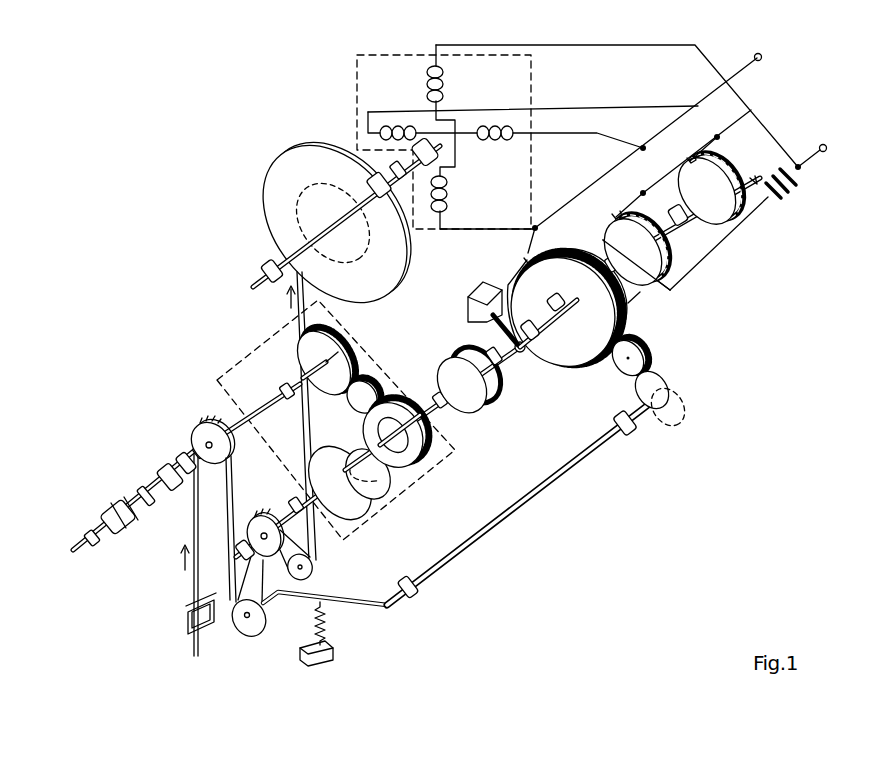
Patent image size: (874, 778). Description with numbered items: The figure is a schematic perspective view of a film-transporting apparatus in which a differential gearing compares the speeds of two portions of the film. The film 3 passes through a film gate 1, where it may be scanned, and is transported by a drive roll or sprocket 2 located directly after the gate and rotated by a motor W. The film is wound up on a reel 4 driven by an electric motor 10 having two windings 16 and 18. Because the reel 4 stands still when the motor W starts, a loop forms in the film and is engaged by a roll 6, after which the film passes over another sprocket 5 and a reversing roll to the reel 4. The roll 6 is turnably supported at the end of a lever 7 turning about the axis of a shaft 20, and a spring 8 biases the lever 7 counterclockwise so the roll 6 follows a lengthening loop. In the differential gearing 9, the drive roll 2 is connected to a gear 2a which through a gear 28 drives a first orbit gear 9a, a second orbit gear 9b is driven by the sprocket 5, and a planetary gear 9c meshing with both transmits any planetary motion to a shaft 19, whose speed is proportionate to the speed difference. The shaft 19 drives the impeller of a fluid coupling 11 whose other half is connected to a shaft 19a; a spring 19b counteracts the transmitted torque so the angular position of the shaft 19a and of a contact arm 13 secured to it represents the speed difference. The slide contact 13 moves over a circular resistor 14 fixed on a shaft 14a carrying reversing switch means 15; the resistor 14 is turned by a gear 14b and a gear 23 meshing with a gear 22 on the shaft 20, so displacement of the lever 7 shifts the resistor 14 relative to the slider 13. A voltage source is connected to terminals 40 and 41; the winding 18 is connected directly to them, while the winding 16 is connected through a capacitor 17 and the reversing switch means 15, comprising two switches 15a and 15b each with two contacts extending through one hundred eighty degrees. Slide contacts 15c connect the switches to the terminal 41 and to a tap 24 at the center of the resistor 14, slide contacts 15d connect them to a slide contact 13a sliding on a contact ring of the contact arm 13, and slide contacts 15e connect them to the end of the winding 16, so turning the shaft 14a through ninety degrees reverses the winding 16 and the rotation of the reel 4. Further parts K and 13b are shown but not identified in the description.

The motor W is at (112, 500).
The yarn guide spools K is at (168, 463).
The film gate 1 is at (187, 620).
The drive roll 2 is at (203, 437).
The gear 2a is at (298, 348).
The film 3 is at (295, 305).
The reel 4 is at (278, 178).
The sprocket 5 is at (260, 525).
The roll 6 is at (248, 634).
The lever 7 is at (325, 608).
The spring 8 is at (333, 627).
The differential gearing 9 is at (449, 441).
The first orbit gear 9a is at (413, 463).
The second orbit gear 9b is at (347, 507).
The planetary gear 9c is at (373, 477).
The electric motor 10 is at (355, 78).
The fluid coupling 11 is at (490, 393).
The contact arm 13 is at (508, 275).
The slide contact 13a is at (573, 330).
The cam 13b is at (560, 300).
The circular resistor 14 is at (627, 330).
The shaft 14a is at (657, 280).
The gear 14b is at (630, 303).
The reversing switch means 15 is at (730, 236).
The switch 15a is at (612, 242).
The switch 15b is at (697, 170).
The slide contacts 15c is at (685, 238).
The slide contacts 15d is at (612, 216).
The slide contacts 15e is at (641, 193).
The winding 16 is at (363, 132).
The capacitor 17 is at (797, 192).
The winding 18 is at (447, 87).
The shaft 19 is at (425, 407).
The shaft 19a is at (526, 260).
The spring 19b is at (523, 350).
The shaft 20 is at (510, 519).
The gear 22 is at (660, 387).
The gear 23 is at (637, 360).
The tap 24 is at (550, 237).
The gear 28 is at (363, 395).
The terminal 40 is at (643, 107).
The terminal 41 is at (659, 138).